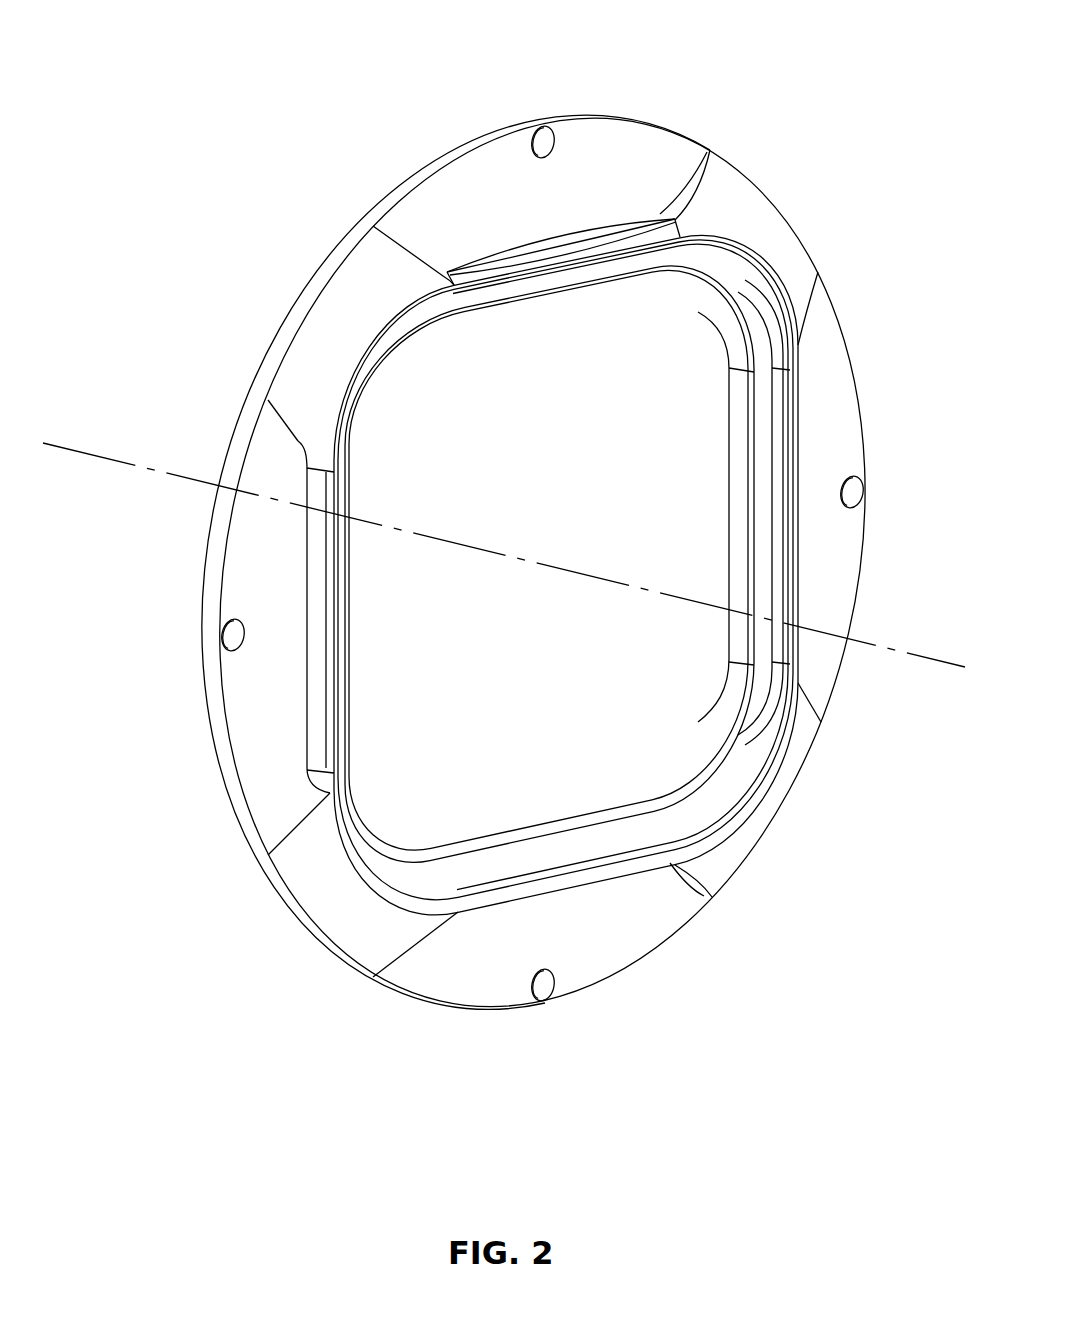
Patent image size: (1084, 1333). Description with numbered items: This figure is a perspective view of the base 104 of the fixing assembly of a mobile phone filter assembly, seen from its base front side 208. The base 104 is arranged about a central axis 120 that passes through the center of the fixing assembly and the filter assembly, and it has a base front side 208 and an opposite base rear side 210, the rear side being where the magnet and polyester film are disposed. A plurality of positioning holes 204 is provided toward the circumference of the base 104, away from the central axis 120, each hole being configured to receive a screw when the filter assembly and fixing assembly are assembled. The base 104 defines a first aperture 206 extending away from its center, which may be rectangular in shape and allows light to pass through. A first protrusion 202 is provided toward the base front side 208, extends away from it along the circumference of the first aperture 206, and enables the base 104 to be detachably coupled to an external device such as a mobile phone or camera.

The base 104 is at (280, 70).
The central axis 120 is at (168, 472).
The first protrusion 202 is at (338, 647).
The positioning holes 204 is at (552, 136).
The first aperture 206 is at (404, 768).
The base front side 208 is at (766, 882).
The base rear side 210 is at (282, 259).